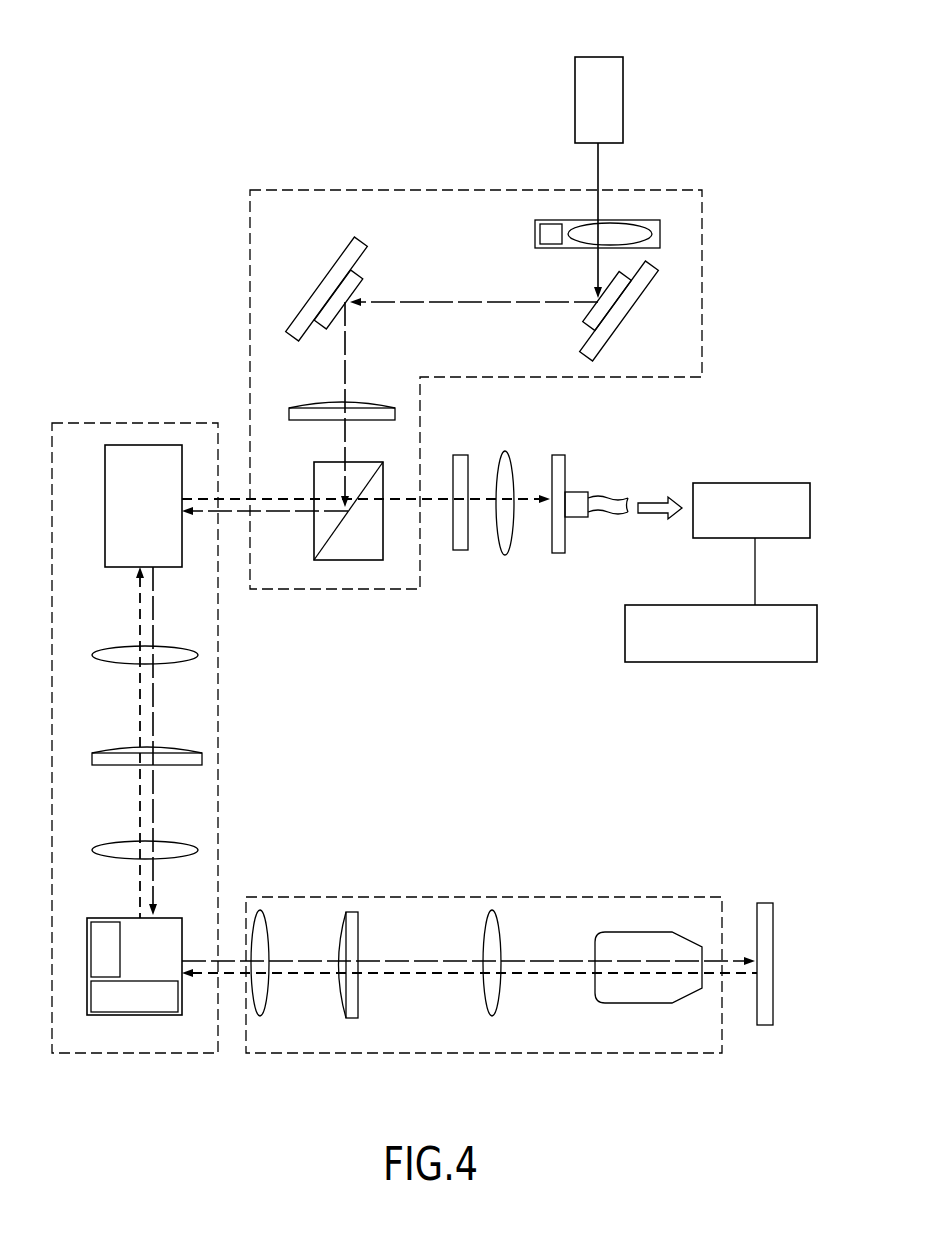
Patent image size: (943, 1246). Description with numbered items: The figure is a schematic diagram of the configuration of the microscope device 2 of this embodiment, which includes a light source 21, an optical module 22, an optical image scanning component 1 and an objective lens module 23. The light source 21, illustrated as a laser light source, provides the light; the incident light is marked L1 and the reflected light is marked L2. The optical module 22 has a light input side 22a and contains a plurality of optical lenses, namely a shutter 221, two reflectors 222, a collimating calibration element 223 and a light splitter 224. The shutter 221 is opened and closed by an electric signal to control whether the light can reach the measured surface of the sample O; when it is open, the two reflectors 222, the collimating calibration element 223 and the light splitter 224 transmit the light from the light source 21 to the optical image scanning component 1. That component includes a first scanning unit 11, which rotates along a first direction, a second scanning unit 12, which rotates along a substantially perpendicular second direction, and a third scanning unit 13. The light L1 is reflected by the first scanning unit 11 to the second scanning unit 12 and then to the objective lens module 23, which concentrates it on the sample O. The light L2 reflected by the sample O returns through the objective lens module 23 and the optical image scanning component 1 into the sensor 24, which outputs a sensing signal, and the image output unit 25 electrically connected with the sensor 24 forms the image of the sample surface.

The optical image scanning component 1 is at (77, 423).
The microscope device 2 is at (126, 152).
The first scanning unit 11 is at (132, 445).
The second scanning unit 12 is at (125, 1007).
The third scanning unit 13 is at (106, 918).
The light source 21 is at (598, 57).
The optical module 22 is at (397, 190).
The light input side 22a is at (492, 180).
The shutter 221 is at (637, 232).
The reflectors 222 is at (312, 292).
The collimating calibration element 223 is at (290, 412).
The light splitter 224 is at (313, 490).
The objective lens module 23 is at (472, 897).
The sensor 24 is at (752, 483).
The image output unit 25 is at (702, 605).
The incident light L1 is at (417, 302).
The reflected light L2 is at (440, 500).
The sample O is at (765, 903).